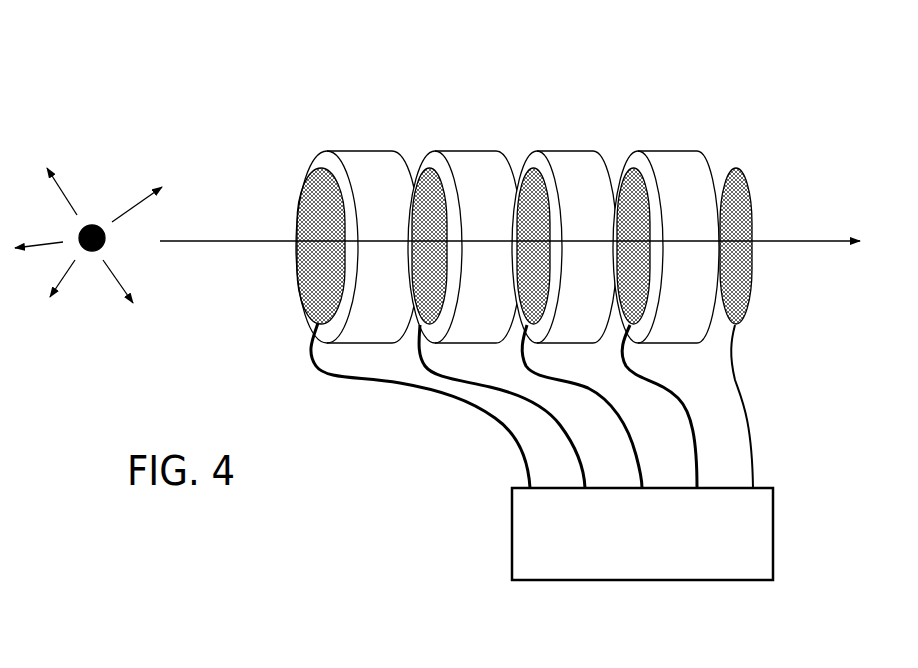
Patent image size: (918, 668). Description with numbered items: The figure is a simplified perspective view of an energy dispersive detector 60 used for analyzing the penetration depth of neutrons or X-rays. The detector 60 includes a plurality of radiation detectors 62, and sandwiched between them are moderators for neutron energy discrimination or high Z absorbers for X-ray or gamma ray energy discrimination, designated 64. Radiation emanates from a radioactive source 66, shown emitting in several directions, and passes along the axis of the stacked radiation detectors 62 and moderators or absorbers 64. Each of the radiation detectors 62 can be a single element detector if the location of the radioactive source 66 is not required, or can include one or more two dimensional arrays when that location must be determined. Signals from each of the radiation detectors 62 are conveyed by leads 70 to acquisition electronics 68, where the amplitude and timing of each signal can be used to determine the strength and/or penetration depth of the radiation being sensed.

The energy dispersive detector 60 is at (803, 107).
The radiation detectors 62 is at (317, 215).
The moderators or high Z absorbers 64 is at (372, 327).
The radioactive source 66 is at (92, 224).
The acquisition electronics 68 is at (512, 546).
The leads 70 is at (543, 408).